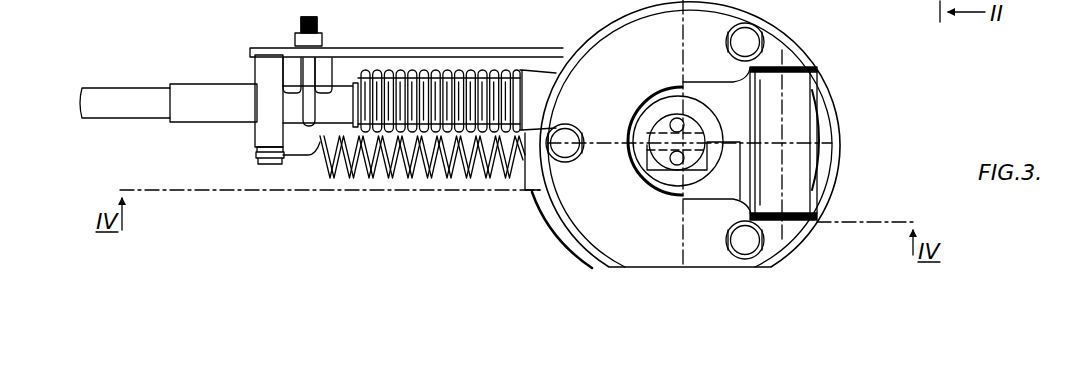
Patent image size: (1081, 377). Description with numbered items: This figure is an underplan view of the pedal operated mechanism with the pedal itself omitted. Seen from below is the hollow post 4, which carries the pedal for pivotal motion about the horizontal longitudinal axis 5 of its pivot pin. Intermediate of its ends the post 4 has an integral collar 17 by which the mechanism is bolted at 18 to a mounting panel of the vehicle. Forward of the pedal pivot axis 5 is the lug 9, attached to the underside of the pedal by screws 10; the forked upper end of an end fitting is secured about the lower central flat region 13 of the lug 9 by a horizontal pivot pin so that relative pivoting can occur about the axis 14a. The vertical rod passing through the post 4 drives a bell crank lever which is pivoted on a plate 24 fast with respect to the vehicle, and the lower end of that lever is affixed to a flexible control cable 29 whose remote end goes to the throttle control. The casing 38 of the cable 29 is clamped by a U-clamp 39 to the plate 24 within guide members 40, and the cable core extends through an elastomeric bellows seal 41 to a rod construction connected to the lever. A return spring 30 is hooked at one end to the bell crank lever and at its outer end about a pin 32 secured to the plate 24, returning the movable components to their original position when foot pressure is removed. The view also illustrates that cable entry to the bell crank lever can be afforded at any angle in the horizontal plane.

The flexible control cable 29 is at (146, 84).
The casing 38 is at (207, 110).
The pin 32 is at (255, 70).
The plate 24 is at (440, 48).
The guide members 40 is at (290, 75).
The U-clamp 39 is at (302, 76).
The elastomeric bellows seal 41 is at (480, 82).
The return spring 30 is at (425, 177).
The collar 17 is at (592, 45).
The axis 14a is at (676, 16).
The hollow post 4 is at (639, 97).
The lower central flat region 13 is at (640, 128).
The screws 10 is at (682, 155).
The lug 9 is at (647, 158).
The horizontal longitudinal axis 5 is at (783, 200).
The bolts 18 is at (746, 45).